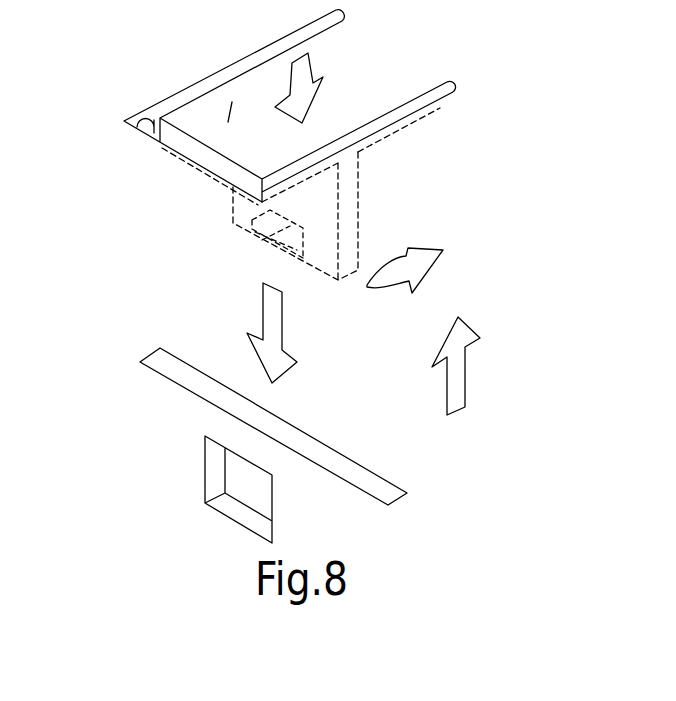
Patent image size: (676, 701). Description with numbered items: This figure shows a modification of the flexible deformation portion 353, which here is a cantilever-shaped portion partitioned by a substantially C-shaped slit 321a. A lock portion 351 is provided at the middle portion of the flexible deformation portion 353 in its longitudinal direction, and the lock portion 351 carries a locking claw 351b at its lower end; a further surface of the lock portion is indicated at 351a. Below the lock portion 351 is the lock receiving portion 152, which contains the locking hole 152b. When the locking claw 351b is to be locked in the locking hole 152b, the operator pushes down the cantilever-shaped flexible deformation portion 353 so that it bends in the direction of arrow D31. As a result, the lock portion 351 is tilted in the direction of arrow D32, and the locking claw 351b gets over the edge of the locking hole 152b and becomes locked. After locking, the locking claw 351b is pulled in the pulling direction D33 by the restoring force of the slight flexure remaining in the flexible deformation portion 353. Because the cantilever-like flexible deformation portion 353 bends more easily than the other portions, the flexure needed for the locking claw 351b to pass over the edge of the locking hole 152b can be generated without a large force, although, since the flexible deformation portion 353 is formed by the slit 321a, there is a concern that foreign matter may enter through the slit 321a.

The flexible deformation portion 353 is at (220, 113).
The slit 321a is at (137, 126).
The lock portion 351 is at (373, 202).
The side surface of protrusion 351a is at (358, 170).
The locking claw 351b is at (260, 238).
The lock receiving portion 152 is at (361, 432).
The locking hole 152b is at (238, 514).
The direction of arrow D31 is at (310, 55).
The direction of arrow D32 is at (387, 290).
The pulling direction D33 is at (467, 372).